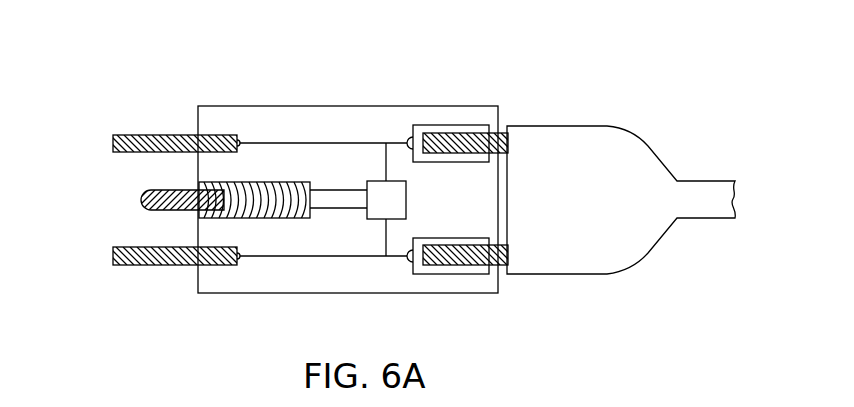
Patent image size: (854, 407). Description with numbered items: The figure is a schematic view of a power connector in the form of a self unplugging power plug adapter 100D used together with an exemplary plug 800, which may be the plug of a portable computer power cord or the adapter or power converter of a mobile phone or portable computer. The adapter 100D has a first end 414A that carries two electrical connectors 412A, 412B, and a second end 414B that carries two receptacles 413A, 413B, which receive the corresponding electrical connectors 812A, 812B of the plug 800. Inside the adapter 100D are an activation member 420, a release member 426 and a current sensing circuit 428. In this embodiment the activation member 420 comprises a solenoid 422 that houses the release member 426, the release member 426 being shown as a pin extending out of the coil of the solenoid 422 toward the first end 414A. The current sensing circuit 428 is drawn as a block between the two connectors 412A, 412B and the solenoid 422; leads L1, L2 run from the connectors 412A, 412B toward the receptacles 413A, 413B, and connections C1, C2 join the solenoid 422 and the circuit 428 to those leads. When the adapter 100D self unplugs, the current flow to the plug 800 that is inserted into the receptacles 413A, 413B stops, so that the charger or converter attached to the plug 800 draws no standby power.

The power plug adapter 100D is at (387, 55).
The first end 414A is at (199, 92).
The second end 414B is at (520, 95).
The electrical connector 412A is at (150, 106).
The electrical connector 412B is at (130, 247).
The release member 426 is at (142, 193).
The solenoid 422 is at (236, 182).
The activation member 420 is at (273, 240).
The current sensing circuit 428 is at (378, 219).
The first lead L1 is at (330, 143).
The second lead L2 is at (303, 257).
The first connection C1 is at (347, 189).
The second connection C2 is at (352, 209).
The receptacle 413A is at (463, 125).
The receptacle 413B is at (468, 275).
The electrical connector 812A is at (483, 153).
The electrical connector 812B is at (483, 245).
The plug 800 is at (621, 200).